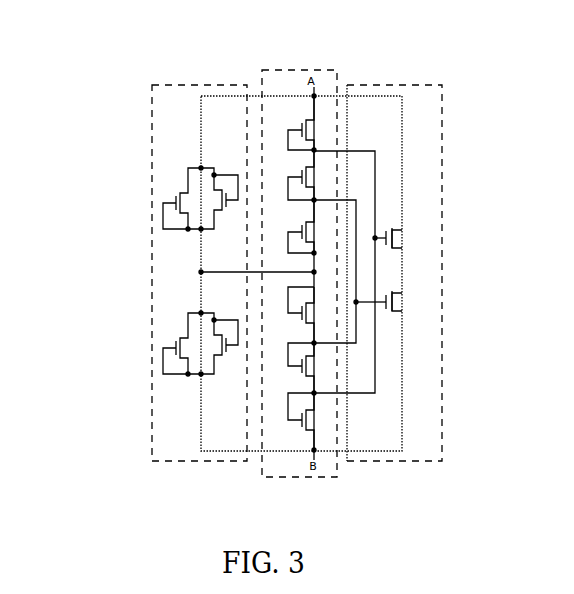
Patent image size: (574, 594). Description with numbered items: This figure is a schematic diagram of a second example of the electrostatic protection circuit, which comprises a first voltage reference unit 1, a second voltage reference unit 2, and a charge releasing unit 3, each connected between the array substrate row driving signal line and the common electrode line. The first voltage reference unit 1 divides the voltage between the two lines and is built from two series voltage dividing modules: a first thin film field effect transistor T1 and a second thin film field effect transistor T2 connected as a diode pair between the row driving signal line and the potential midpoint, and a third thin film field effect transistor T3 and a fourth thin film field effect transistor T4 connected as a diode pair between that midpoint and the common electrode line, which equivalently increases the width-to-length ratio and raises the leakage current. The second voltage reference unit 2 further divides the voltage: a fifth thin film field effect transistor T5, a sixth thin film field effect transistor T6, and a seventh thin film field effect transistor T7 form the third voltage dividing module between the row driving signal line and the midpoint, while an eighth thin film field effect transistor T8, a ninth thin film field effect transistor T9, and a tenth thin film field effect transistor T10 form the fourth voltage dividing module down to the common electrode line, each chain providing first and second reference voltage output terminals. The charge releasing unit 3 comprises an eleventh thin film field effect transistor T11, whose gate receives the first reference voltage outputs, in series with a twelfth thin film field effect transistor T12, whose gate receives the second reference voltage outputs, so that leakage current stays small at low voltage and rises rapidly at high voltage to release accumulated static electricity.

The first voltage reference unit 1 is at (150, 84).
The second voltage reference unit 2 is at (262, 70).
The charge releasing unit 3 is at (413, 83).
The first thin film field effect transistor T1 is at (181, 198).
The second thin film field effect transistor T2 is at (181, 343).
The third thin film field effect transistor T3 is at (220, 198).
The fourth thin film field effect transistor T4 is at (219, 343).
The fifth thin film field effect transistor T5 is at (293, 123).
The sixth thin film field effect transistor T6 is at (293, 175).
The seventh thin film field effect transistor T7 is at (293, 226).
The eighth thin film field effect transistor T8 is at (293, 315).
The ninth thin film field effect transistor T9 is at (293, 368).
The tenth thin film field effect transistor T10 is at (291, 421).
The eleventh thin film field effect transistor T11 is at (403, 238).
The twelfth thin film field effect transistor T12 is at (394, 301).